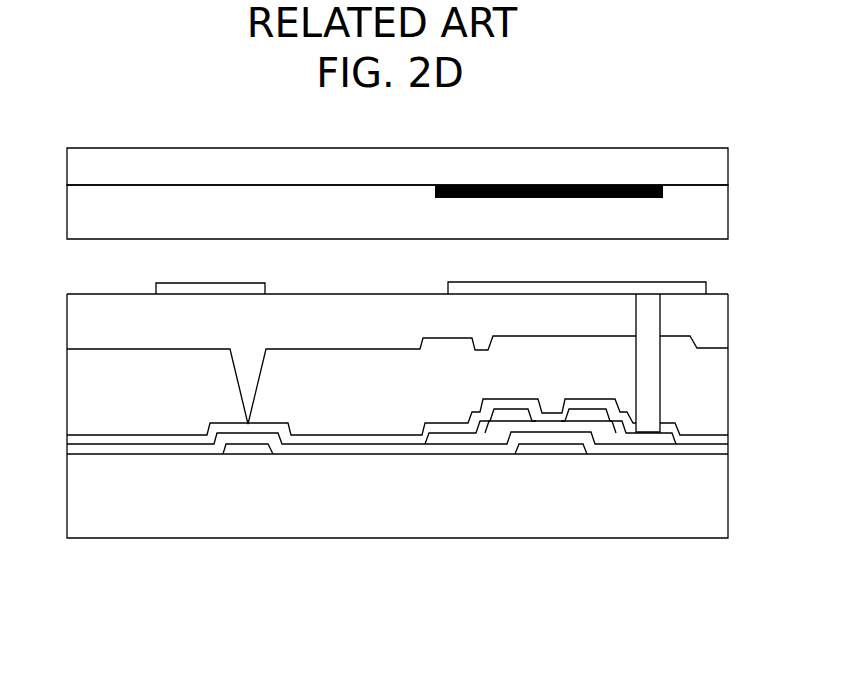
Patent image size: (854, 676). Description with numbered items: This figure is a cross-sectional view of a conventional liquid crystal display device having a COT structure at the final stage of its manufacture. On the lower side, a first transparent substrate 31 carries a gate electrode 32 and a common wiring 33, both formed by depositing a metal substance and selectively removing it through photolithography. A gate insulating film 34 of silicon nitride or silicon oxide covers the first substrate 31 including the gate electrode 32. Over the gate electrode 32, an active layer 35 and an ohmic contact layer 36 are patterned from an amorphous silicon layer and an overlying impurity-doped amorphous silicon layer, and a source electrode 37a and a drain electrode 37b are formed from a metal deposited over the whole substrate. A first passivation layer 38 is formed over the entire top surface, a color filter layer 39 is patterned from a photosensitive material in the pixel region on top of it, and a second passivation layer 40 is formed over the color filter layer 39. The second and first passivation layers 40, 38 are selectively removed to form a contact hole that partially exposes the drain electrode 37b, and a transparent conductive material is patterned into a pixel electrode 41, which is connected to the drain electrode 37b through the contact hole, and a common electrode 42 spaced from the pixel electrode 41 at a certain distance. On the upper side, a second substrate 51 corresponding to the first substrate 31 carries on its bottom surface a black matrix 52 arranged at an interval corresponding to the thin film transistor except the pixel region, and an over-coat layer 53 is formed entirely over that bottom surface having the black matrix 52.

The first transparent substrate 31 is at (728, 496).
The gate electrode 32 is at (553, 450).
The common wiring 33 is at (245, 454).
The gate insulating film 34 is at (728, 450).
The active layer 35 is at (500, 438).
The ohmic contact layer 36 is at (610, 438).
The source electrode 37a is at (453, 454).
The drain electrode 37b is at (653, 438).
The first passivation layer 38 is at (728, 438).
The color filter layer 39 is at (728, 377).
The second passivation layer 40 is at (728, 321).
The pixel electrode 41 is at (706, 285).
The common electrode 42 is at (265, 291).
The second substrate 51 is at (728, 160).
The black matrix 52 is at (663, 192).
The over-coat layer 53 is at (728, 224).